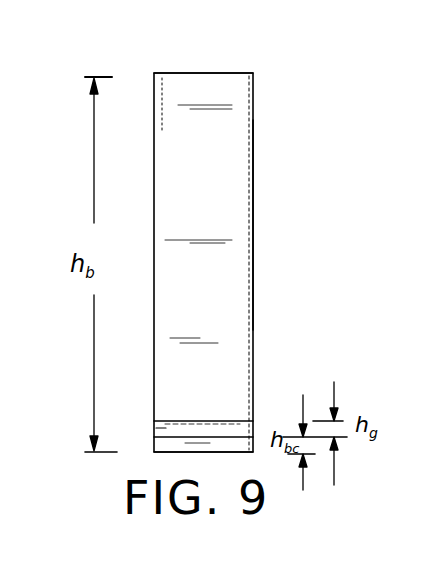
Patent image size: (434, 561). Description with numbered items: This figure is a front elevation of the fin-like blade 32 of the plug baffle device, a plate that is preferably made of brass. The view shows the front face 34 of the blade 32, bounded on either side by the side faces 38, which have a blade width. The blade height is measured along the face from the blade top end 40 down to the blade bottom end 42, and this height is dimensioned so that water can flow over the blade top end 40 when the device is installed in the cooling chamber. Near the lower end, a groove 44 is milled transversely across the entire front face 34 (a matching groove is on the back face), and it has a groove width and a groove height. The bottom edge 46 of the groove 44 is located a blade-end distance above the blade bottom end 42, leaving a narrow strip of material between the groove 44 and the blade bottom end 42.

The fin-like blade 32 is at (265, 63).
The front face 34 is at (225, 178).
The side faces 38 is at (253, 225).
The blade top end 40 is at (187, 73).
The blade bottom end 42 is at (210, 452).
The grooves 44 is at (237, 433).
The bottom edges 46 is at (163, 433).